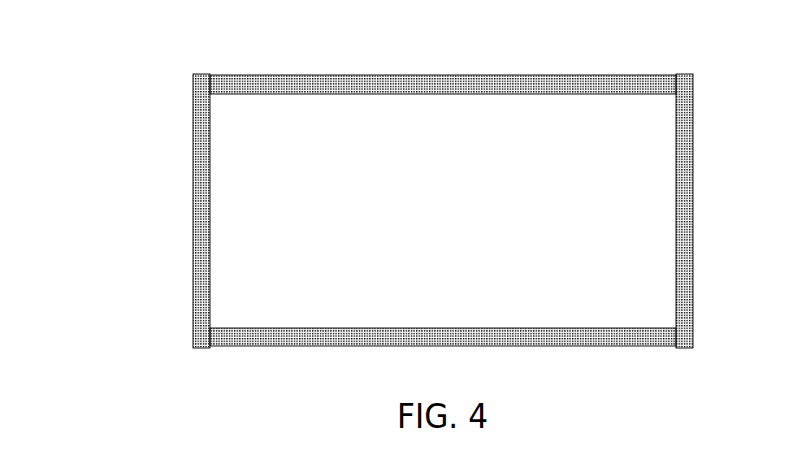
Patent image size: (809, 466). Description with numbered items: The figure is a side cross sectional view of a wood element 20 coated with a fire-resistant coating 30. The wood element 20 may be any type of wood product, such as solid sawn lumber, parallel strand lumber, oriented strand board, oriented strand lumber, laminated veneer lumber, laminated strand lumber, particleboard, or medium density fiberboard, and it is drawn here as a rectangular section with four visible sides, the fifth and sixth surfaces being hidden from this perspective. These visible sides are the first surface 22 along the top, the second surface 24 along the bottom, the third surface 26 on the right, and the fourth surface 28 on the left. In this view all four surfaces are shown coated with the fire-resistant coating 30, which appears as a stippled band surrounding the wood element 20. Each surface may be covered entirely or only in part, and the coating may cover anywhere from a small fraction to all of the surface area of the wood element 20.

The wood element 20 is at (150, 91).
The first surface 22 is at (555, 85).
The second surface 24 is at (633, 345).
The third surface 26 is at (678, 228).
The fourth surface 28 is at (203, 248).
The fire-resistant coating 30 is at (662, 77).